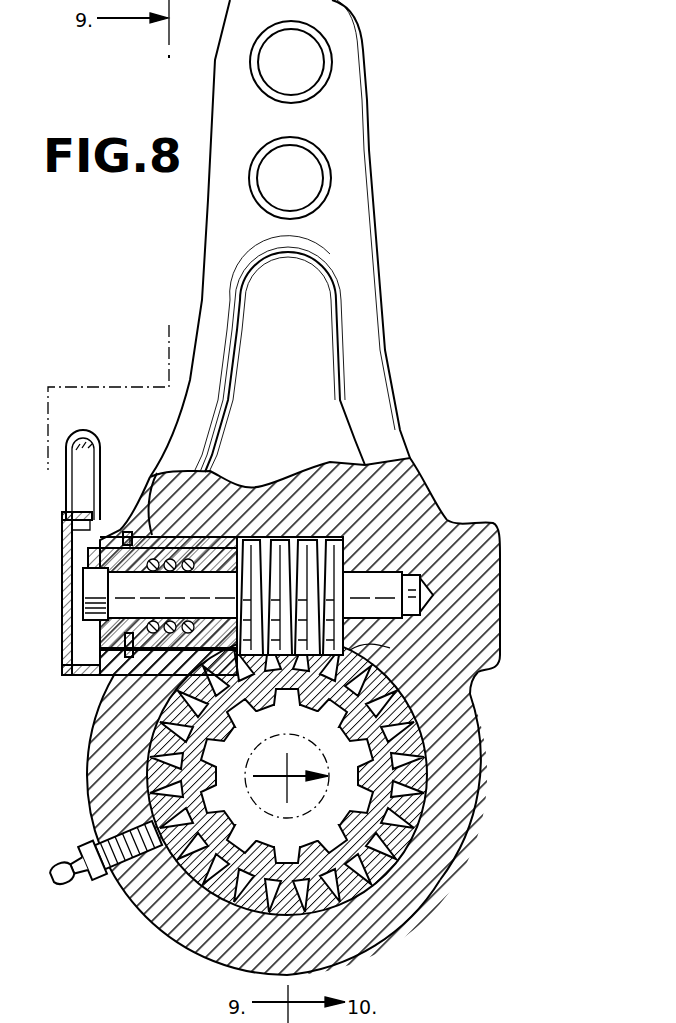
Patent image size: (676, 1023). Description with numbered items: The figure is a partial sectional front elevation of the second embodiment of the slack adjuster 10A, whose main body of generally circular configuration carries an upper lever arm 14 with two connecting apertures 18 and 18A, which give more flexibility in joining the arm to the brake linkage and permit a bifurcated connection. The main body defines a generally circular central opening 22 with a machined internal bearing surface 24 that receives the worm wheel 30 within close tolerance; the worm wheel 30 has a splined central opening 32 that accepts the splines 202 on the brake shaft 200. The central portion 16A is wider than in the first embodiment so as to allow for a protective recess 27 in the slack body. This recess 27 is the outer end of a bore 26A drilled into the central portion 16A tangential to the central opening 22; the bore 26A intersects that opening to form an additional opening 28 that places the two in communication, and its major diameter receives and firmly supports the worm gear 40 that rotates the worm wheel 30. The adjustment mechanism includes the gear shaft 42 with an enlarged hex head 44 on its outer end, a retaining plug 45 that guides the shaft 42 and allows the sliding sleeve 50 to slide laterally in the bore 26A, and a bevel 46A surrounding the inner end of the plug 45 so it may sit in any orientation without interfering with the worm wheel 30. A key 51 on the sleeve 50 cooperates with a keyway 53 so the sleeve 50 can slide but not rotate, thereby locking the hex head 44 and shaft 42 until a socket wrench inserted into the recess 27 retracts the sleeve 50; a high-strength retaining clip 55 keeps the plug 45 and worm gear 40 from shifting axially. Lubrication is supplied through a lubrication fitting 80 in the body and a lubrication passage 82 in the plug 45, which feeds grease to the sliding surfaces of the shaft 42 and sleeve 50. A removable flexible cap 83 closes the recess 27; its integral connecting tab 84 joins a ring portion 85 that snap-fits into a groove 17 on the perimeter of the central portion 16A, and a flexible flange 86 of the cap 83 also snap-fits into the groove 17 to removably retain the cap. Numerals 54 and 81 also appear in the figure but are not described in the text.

The slack adjuster 10A is at (196, 302).
The lever arm portion 14 is at (336, 257).
The central portion 16A is at (472, 654).
The groove 17 is at (76, 675).
The connecting aperture 18 is at (316, 69).
The connecting aperture 18A is at (318, 178).
The central opening 22 is at (478, 795).
The internal bearing surface 24 is at (197, 953).
The bore 26A is at (285, 545).
The protective recess 27 is at (146, 535).
The additional opening 28 is at (365, 652).
The worm wheel 30 is at (330, 868).
The central opening 32 is at (332, 723).
The worm gear 40 is at (408, 493).
The gear shaft 42 is at (430, 537).
The hex head 44 is at (90, 582).
The retaining plug 45 is at (108, 678).
The bevel 46A is at (247, 705).
The sliding sleeve 50 is at (70, 668).
The key 51 is at (88, 552).
The keyway 53 is at (160, 490).
The spring retainer 54 is at (107, 640).
The retaining clip 55 is at (108, 668).
The lubrication fitting 80 is at (92, 888).
The sleeve 81 is at (237, 527).
The lubrication passage 82 is at (222, 528).
The removable cap 83 is at (62, 614).
The connecting tab 84 is at (96, 450).
The ring portion 85 is at (98, 533).
The flexible flange 86 is at (62, 532).
The brake shaft 200 is at (300, 826).
The splines 202 is at (415, 870).